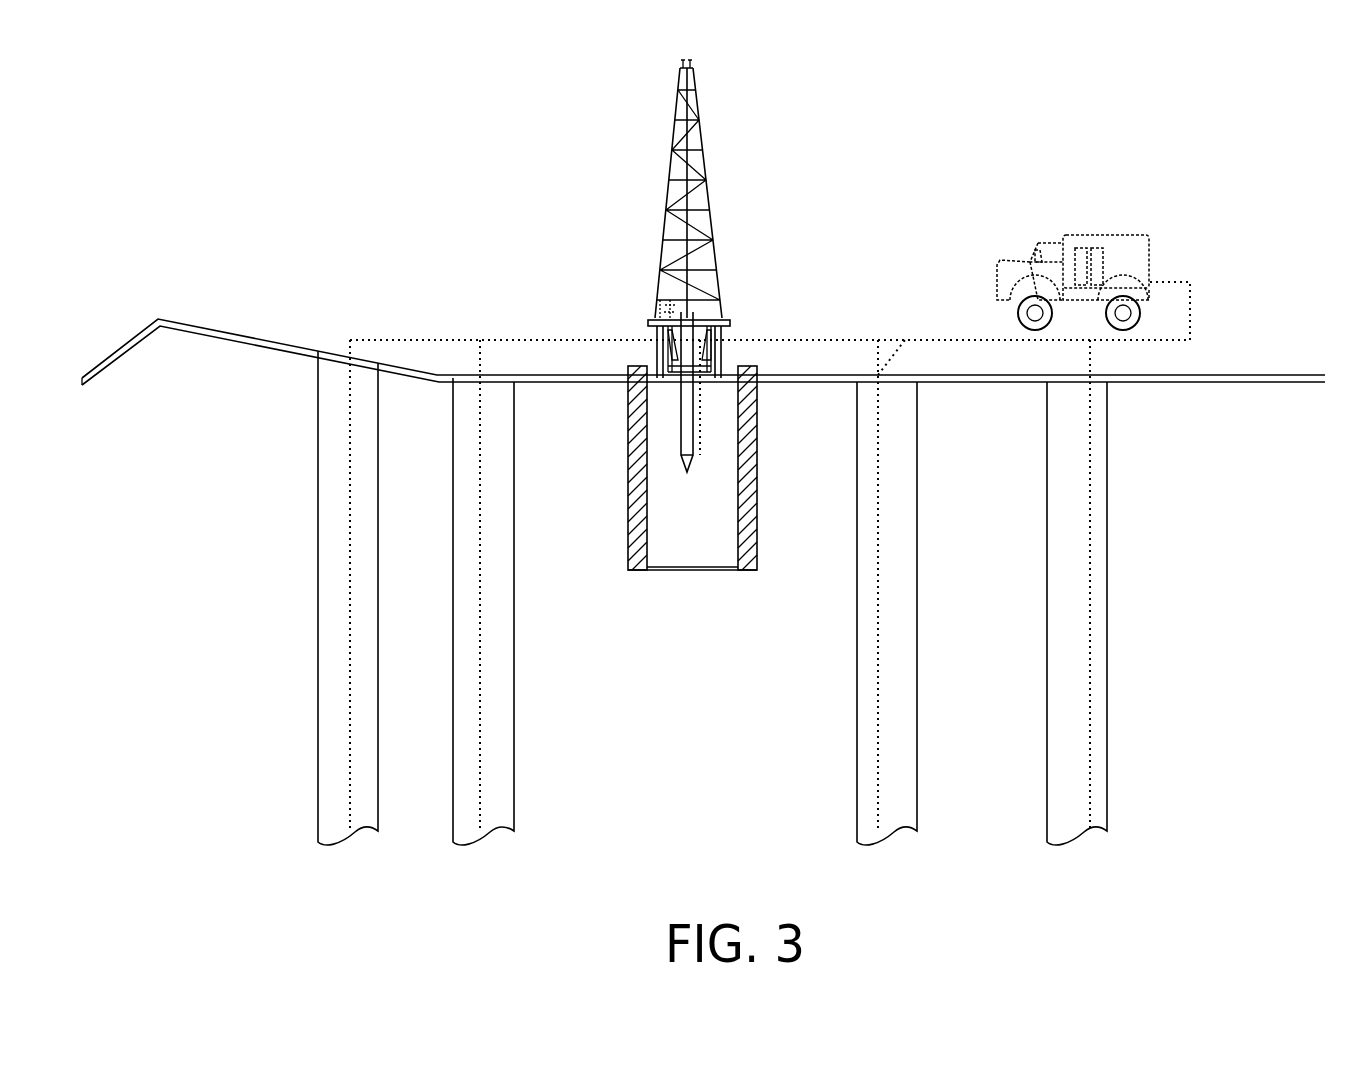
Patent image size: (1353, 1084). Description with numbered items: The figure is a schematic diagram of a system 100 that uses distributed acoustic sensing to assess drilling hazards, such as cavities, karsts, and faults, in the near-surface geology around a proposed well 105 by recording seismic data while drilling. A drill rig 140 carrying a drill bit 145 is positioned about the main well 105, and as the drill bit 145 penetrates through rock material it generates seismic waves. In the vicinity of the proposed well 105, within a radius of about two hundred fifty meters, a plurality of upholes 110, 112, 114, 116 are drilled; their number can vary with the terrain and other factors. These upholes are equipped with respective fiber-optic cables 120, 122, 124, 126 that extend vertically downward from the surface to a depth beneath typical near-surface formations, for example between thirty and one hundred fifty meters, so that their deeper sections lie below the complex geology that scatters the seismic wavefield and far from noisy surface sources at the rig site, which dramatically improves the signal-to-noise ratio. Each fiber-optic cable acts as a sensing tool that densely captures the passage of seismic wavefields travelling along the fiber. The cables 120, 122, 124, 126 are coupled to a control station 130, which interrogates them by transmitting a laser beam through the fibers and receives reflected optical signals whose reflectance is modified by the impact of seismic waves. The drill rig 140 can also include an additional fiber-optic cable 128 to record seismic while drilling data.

The system 100 is at (247, 102).
The proposed well 105 is at (715, 517).
The uphole 110 is at (378, 532).
The uphole 112 is at (514, 565).
The uphole 114 is at (917, 568).
The uphole 116 is at (1052, 462).
The fiber-optic cable 120 is at (345, 490).
The fiber-optic cable 122 is at (478, 636).
The fiber-optic cable 124 is at (875, 662).
The fiber-optic cable 126 is at (1100, 532).
The additional fiber-optic cable 128 is at (700, 432).
The control station 130 is at (1094, 232).
The drill rig 140 is at (716, 222).
The drill bit 145 is at (682, 432).